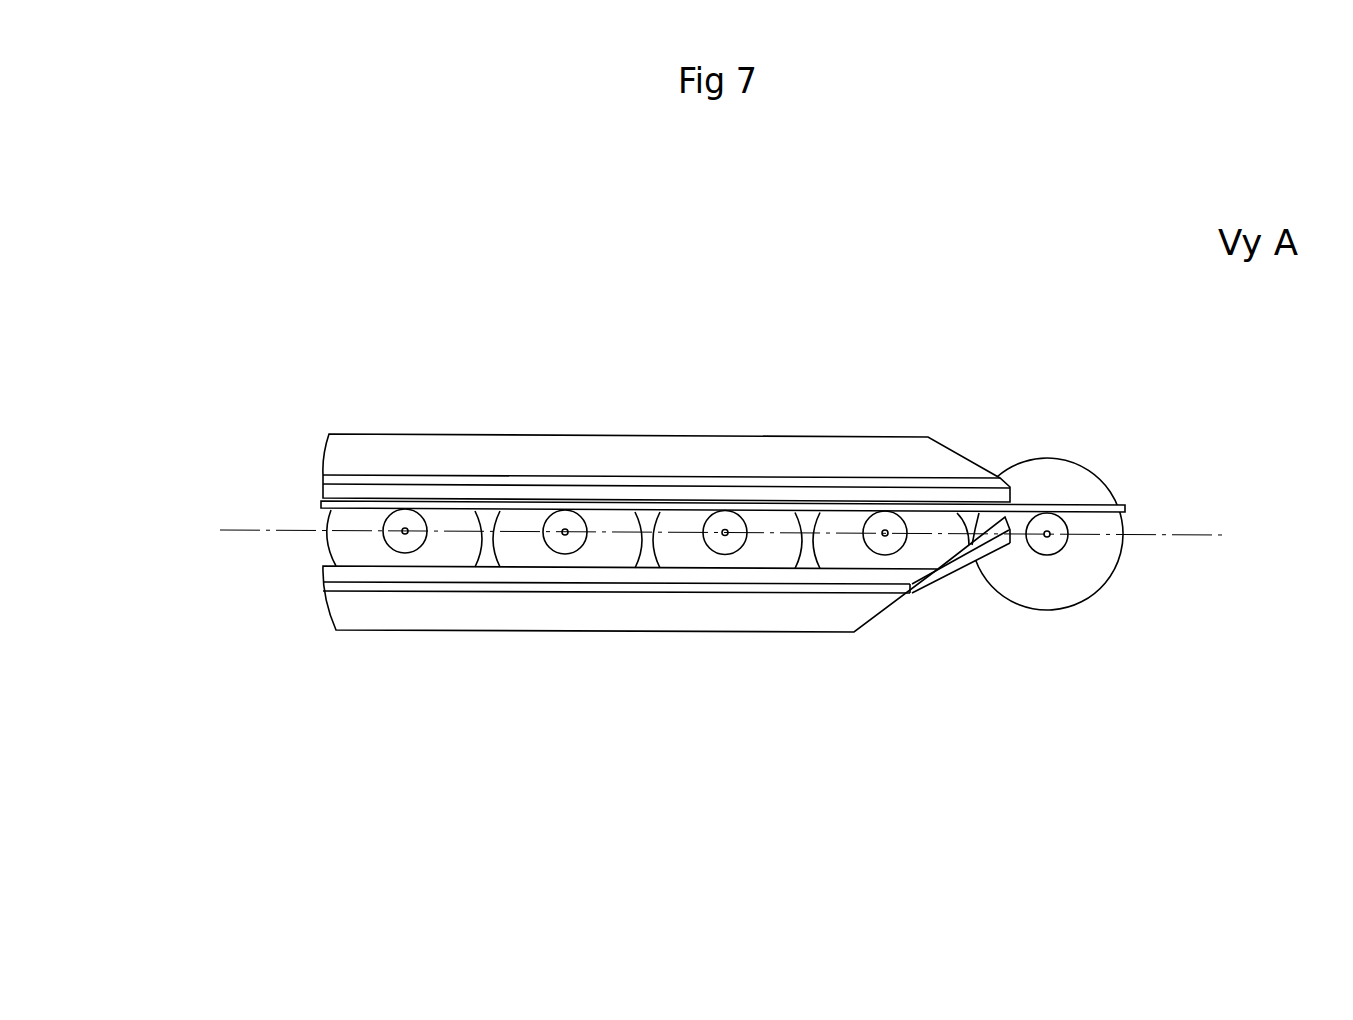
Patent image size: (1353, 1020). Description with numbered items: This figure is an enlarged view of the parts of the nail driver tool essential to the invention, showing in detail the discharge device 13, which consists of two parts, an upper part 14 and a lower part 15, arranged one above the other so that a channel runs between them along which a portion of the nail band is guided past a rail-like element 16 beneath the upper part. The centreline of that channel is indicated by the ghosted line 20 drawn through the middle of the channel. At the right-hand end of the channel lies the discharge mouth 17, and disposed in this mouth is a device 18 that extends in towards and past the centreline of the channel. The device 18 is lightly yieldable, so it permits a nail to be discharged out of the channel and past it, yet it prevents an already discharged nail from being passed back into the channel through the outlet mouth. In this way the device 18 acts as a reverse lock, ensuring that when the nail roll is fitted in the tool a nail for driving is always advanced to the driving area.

The discharge device 13 is at (414, 391).
The part of the discharge device 14 is at (535, 452).
The part of the discharge device 15 is at (472, 612).
The guide rail 16 is at (286, 501).
The discharge mouth 17 is at (1008, 419).
The reverse lock device 18 is at (958, 557).
The ghosted line 20 is at (233, 528).